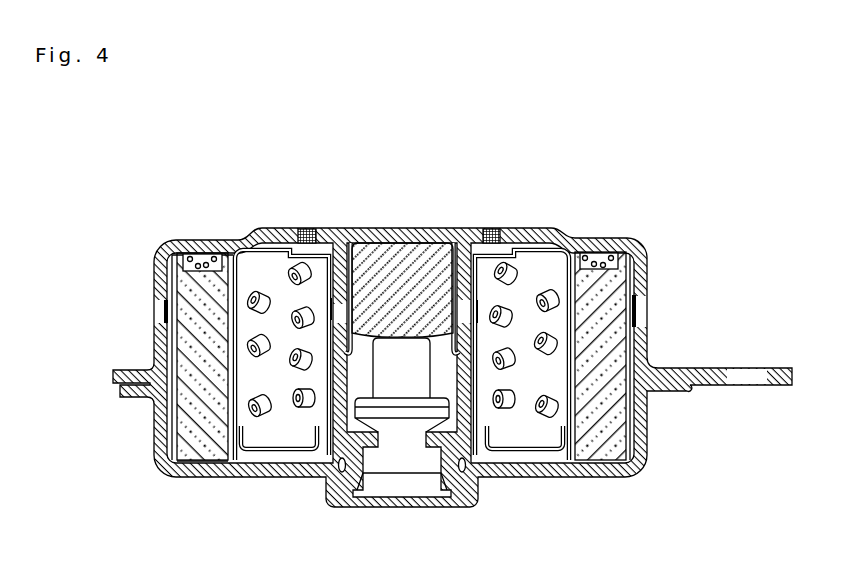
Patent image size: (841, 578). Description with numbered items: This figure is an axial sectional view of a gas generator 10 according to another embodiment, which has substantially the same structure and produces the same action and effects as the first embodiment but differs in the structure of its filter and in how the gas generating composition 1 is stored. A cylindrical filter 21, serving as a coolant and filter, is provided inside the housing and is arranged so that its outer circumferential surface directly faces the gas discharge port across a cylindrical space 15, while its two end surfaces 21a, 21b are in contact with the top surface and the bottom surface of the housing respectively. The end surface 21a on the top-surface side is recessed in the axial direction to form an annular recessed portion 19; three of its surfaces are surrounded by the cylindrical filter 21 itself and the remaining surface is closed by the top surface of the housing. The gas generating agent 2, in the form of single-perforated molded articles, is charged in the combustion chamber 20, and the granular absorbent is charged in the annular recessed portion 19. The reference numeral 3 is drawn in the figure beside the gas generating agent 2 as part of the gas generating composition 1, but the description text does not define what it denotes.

The cylindrical space 15 is at (163, 428).
The gas generator 10 is at (413, 210).
The gas generating composition 1 is at (552, 301).
The gas generating agent 2 is at (517, 272).
The absorbent block 3 is at (596, 265).
The annular recessed portion 19 is at (198, 254).
The combustion chamber 20 is at (268, 257).
The cylindrical filter 21 is at (180, 290).
The end surface of the cylindrical filter 21a is at (182, 250).
The end surface of the cylindrical filter 21b is at (200, 466).